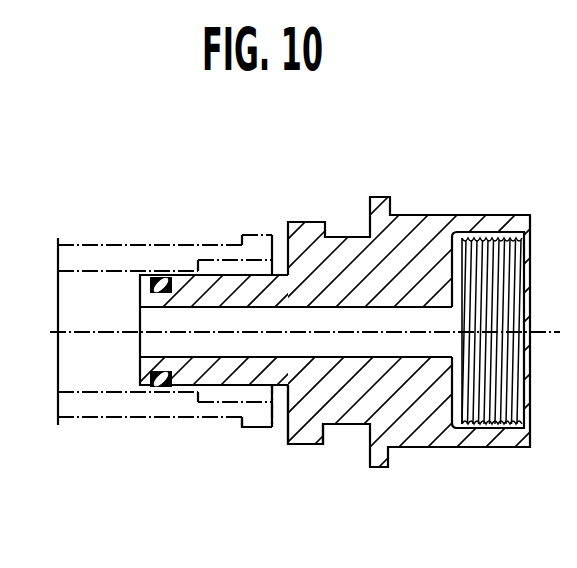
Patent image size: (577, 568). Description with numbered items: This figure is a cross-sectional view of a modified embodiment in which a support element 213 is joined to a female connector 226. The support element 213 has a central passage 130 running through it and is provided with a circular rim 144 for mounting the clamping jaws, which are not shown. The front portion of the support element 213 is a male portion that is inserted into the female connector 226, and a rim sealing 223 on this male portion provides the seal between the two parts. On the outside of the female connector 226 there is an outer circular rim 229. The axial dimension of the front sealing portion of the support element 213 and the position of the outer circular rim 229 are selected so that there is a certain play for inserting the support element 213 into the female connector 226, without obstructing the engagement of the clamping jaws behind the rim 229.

The central passage 130 is at (400, 342).
The circular rim 144 is at (305, 445).
The support element 213 is at (398, 231).
The rim sealing 223 is at (170, 390).
The female connector 226 is at (120, 402).
The outer circular rim 229 is at (258, 418).